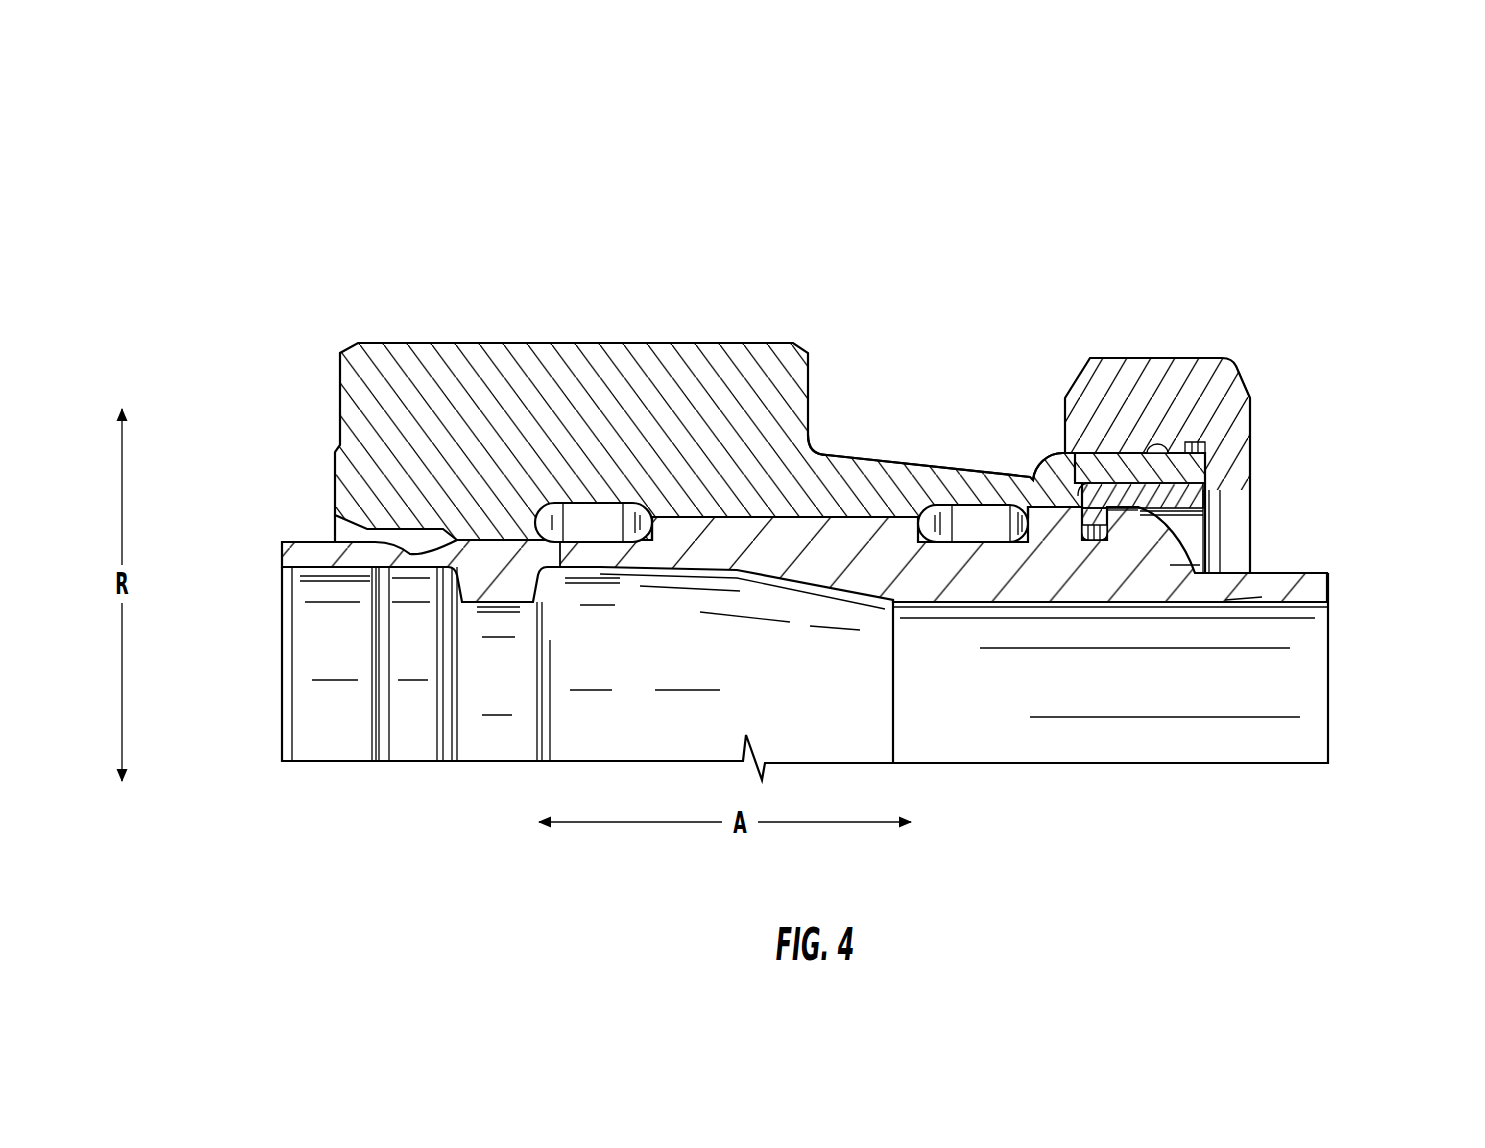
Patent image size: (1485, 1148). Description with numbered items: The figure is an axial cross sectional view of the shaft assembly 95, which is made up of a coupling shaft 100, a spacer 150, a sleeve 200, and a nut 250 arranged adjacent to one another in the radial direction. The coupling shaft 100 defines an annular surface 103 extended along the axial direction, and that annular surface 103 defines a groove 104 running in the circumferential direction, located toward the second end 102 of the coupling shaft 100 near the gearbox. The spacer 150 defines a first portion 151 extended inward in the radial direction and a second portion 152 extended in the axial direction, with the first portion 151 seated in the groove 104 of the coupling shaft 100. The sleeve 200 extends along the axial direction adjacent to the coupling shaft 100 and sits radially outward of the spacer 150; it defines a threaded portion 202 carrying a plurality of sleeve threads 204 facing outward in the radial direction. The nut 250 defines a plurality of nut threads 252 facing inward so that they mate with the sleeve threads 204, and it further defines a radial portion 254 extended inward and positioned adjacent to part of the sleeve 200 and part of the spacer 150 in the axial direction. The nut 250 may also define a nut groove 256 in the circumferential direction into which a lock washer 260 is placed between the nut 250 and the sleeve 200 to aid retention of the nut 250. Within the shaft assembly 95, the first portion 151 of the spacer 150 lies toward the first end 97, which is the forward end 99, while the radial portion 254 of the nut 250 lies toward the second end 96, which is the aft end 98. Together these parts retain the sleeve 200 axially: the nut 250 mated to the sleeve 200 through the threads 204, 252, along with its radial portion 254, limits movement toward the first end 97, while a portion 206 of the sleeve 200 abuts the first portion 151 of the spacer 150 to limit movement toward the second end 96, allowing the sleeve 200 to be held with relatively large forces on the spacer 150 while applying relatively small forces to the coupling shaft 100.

The shaft assembly 95 is at (1070, 143).
The second end of the shaft assembly 96 is at (1414, 690).
The first end of the shaft assembly 97 is at (219, 705).
The aft end 98 is at (1424, 533).
The forward end 99 is at (197, 557).
The coupling shaft 100 is at (1312, 592).
The second end of the coupling shaft 102 is at (310, 405).
The annular surface 103 is at (779, 512).
The groove 104 is at (1112, 550).
The spacer 150 is at (1200, 512).
The first portion of the spacer 151 is at (1092, 545).
The second portion of the spacer 152 is at (1213, 483).
The sleeve 200 is at (880, 470).
The threaded portion 202 is at (1056, 453).
The sleeve threads 204 is at (1108, 457).
The portion of the sleeve 206 is at (1074, 509).
The nut 250 is at (1145, 370).
The nut threads 252 is at (1130, 450).
The radial portion 254 is at (1226, 468).
The nut groove 256 is at (1232, 456).
The lock washer 260 is at (1176, 436).